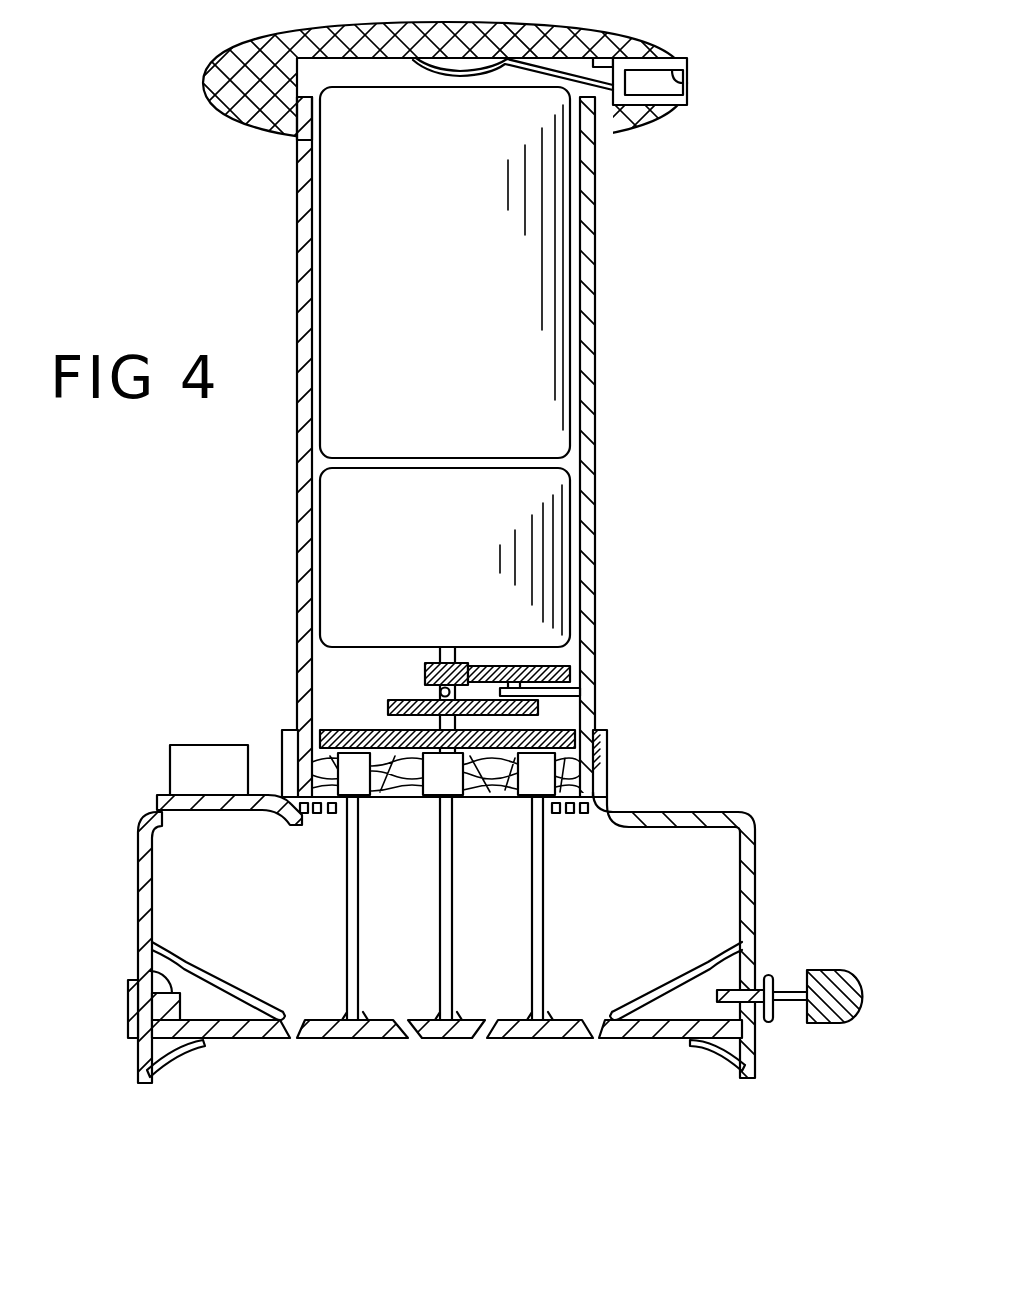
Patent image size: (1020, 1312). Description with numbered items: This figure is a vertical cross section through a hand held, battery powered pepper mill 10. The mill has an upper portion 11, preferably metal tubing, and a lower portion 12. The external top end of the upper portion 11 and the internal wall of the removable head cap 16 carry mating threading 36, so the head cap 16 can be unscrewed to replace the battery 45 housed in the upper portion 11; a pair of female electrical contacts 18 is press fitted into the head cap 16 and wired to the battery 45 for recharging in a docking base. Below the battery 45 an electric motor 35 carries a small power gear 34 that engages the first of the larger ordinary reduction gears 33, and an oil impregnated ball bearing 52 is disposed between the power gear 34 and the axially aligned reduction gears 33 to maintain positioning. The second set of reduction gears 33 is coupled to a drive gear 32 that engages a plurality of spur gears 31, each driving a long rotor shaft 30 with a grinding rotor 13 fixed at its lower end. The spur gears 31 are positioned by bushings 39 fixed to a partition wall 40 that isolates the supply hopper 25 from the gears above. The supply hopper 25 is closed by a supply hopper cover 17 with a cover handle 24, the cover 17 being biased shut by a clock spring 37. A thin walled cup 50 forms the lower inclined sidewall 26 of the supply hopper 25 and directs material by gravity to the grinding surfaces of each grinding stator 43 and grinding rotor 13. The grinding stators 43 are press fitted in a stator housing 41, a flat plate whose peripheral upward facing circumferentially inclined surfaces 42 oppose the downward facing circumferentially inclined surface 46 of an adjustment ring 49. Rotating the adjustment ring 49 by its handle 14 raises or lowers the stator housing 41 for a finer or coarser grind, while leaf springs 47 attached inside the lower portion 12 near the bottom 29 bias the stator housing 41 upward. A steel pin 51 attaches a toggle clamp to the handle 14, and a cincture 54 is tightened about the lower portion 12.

The pepper mill 10 is at (805, 312).
The upper portion 11 is at (595, 378).
The lower portion 12 is at (136, 862).
The grinding rotors 13 is at (330, 1040).
The grind quality adjustment ring handle 14 is at (832, 972).
The head cap 16 is at (200, 92).
The supply hopper cover 17 is at (192, 806).
The female electrical contacts 18 is at (690, 80).
The cover handle 24 is at (202, 744).
The supply hopper 25 is at (245, 923).
The lower inclined sidewall 26 is at (740, 903).
The bottom 29 is at (318, 1075).
The rotor shaft 30 is at (359, 900).
The spur gears 31 is at (290, 733).
The drive gear 32 is at (392, 706).
The reduction gears 33 is at (560, 693).
The power gear 34 is at (428, 662).
The electric motor 35 is at (438, 563).
The threading 36 is at (300, 145).
The clock spring 37 is at (326, 816).
The bushings 39 is at (360, 792).
The partition wall 40 is at (455, 792).
The stator housing 41 is at (195, 1036).
The upward facing circumferentially inclined surfaces 42 is at (140, 1030).
The grinding stators 43 is at (222, 1040).
The battery 45 is at (443, 303).
The downward facing circumferentially inclined surface 46 is at (140, 986).
The leaf springs 47 is at (165, 1076).
The adjustment ring 49 is at (740, 1015).
The thin walled cup 50 is at (238, 988).
The steel pin 51 is at (769, 974).
The oil impregnated ball bearing 52 is at (432, 688).
The cincture 54 is at (127, 1010).